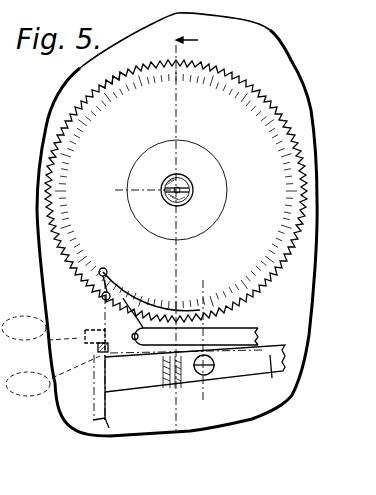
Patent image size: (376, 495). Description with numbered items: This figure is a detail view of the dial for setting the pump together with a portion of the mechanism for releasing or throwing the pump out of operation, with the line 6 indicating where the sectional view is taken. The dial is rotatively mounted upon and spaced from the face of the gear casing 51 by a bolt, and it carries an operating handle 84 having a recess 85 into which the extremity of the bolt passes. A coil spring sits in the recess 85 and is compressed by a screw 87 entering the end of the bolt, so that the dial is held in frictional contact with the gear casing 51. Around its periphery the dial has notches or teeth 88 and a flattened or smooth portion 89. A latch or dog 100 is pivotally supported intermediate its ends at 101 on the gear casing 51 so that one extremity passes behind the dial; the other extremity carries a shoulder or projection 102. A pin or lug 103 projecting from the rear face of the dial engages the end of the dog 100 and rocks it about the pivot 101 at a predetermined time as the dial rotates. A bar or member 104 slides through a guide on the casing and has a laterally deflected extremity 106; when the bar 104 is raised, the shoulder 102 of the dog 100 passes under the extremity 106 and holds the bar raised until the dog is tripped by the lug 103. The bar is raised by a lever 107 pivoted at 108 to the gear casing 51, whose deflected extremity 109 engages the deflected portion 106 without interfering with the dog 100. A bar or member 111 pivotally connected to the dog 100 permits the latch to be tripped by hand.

The section line 6- 6 is at (188, 234).
The gear casing 51 is at (302, 318).
The operating handle 84 is at (155, 152).
The recess 85 is at (142, 190).
The screw 87 is at (175, 203).
The peripheral notches or teeth 88 is at (274, 107).
The flattened or smooth portion 89 is at (100, 90).
The latch or dog 100 is at (120, 318).
The pivotal support 101 is at (103, 303).
The shoulder or projection 102 is at (98, 347).
The pin or lug 103 is at (231, 308).
The bar or member 104 is at (103, 418).
The deflected extremity 106 is at (51, 356).
The lever 107 is at (196, 372).
The pivotal support 108 is at (230, 407).
The extremity 109 is at (112, 377).
The bar or member 111 is at (255, 338).